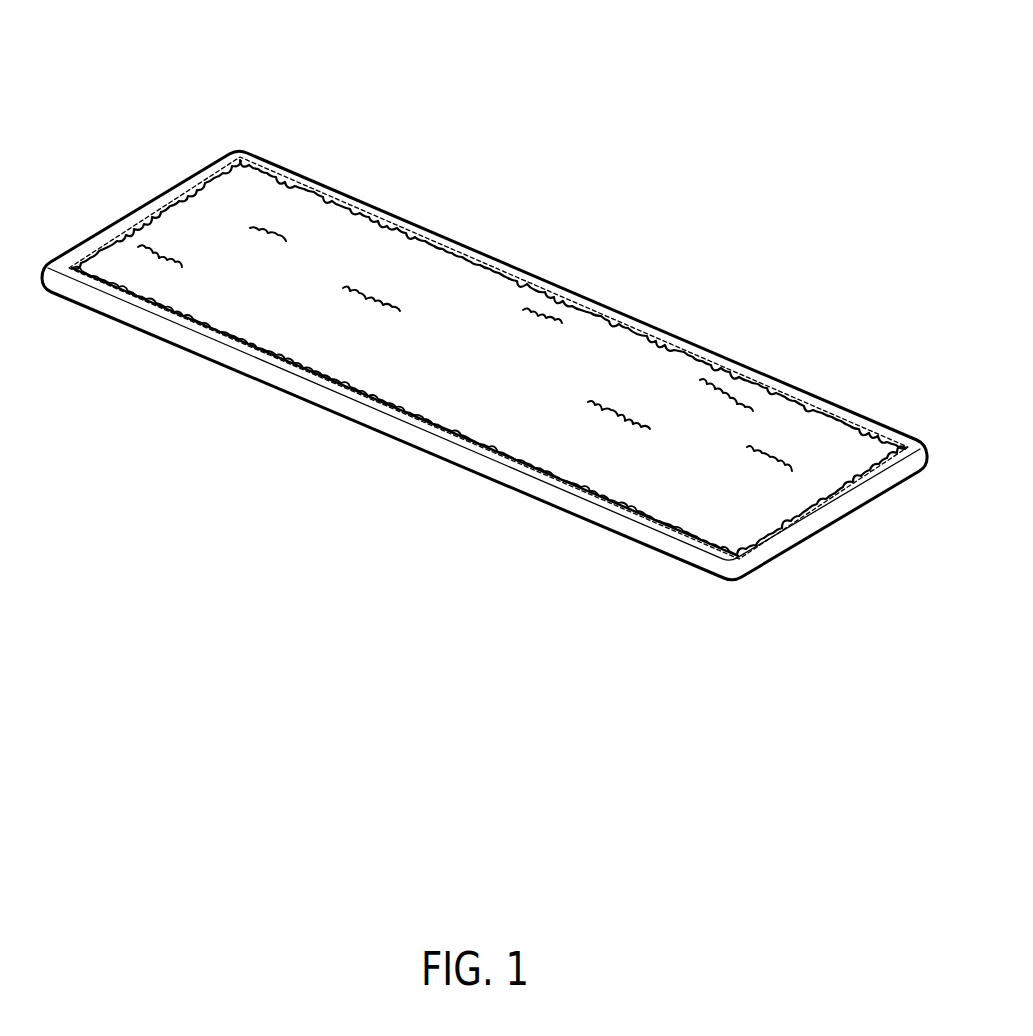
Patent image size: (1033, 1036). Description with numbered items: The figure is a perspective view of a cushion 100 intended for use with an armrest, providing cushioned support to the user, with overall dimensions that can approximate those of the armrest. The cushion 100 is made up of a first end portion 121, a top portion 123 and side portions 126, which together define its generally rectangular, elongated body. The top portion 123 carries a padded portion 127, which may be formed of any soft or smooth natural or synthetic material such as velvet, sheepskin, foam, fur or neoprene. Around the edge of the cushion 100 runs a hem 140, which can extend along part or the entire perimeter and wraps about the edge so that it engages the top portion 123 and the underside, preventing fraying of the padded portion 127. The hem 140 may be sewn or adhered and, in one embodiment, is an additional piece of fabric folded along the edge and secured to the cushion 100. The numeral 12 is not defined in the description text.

The cushion 100 is at (487, 301).
The hem 140 is at (375, 420).
The top portion 123 is at (437, 308).
The first end portion 121 is at (167, 217).
The absorbent pad 12 is at (815, 485).
The padded portion 127 is at (270, 287).
The side portions 126 is at (578, 307).